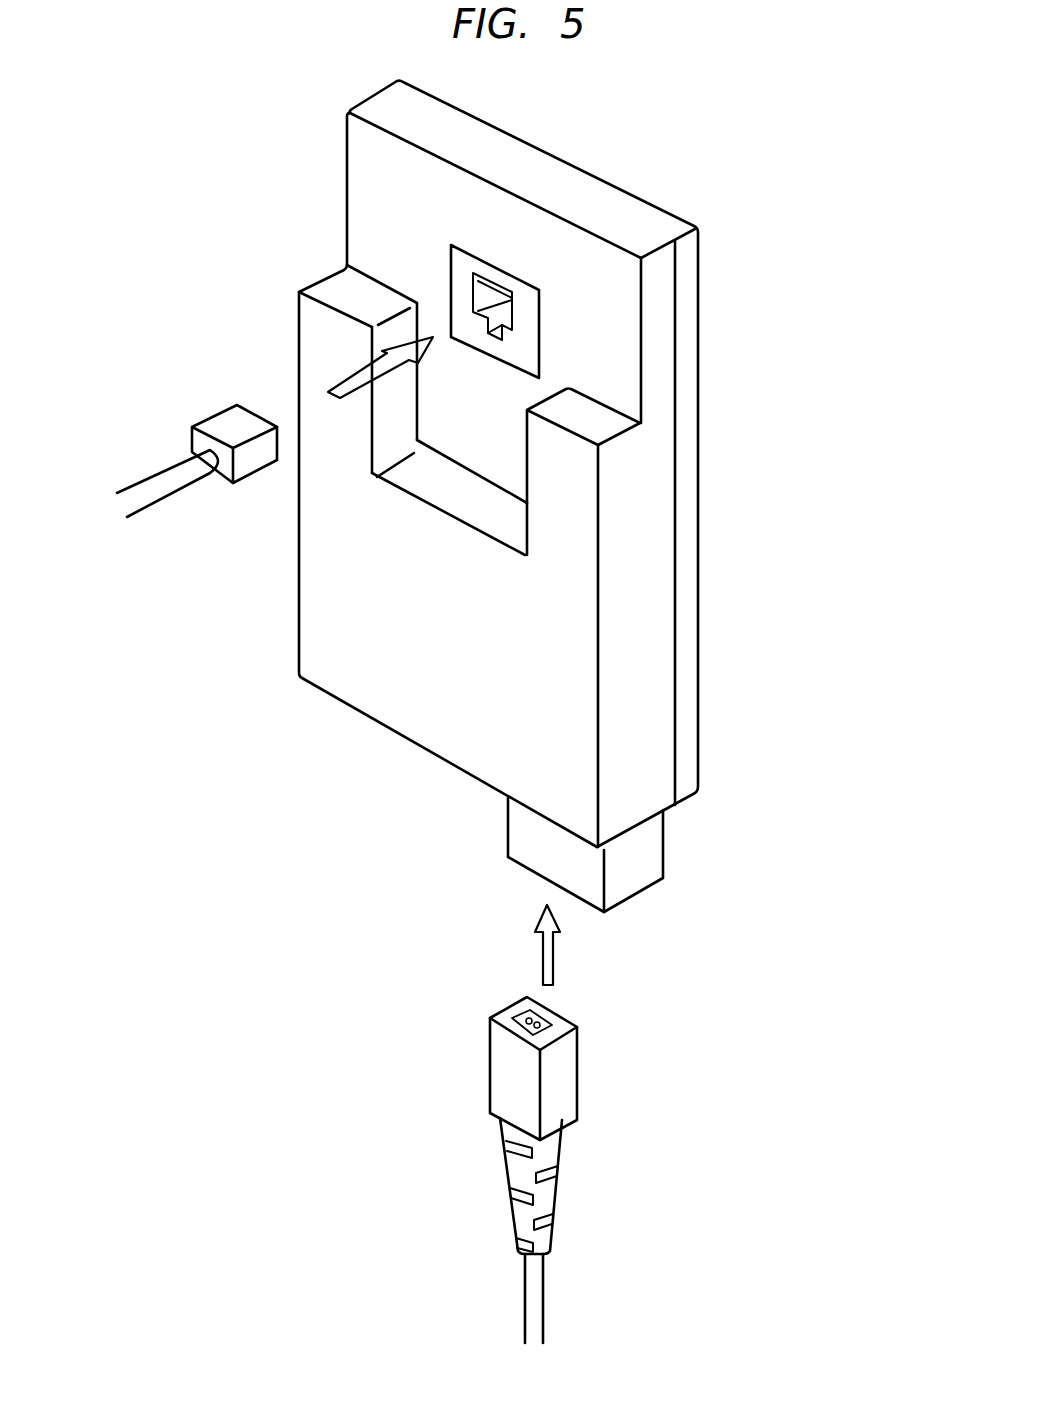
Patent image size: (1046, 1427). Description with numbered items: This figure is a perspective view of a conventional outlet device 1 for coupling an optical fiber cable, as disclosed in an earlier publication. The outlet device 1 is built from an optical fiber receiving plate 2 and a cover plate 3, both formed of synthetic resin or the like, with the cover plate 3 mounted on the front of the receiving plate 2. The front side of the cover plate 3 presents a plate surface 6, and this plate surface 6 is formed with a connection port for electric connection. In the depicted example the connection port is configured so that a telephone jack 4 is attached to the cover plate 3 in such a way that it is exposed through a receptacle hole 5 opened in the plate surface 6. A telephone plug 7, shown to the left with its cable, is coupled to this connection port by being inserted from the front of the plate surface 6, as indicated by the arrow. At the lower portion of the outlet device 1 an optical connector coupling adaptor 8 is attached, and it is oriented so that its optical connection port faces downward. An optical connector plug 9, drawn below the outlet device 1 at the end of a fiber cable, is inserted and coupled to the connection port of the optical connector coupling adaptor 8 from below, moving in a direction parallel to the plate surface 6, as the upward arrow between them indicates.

The outlet device 1 is at (542, 496).
The optical fiber receiving plate 2 is at (685, 542).
The cover plate 3 is at (645, 660).
The telephone jack 4 is at (522, 337).
The receptacle hole 5 is at (527, 283).
The plate surface 6 is at (570, 503).
The telephone plug 7 is at (250, 458).
The optical connector coupling adaptor 8 is at (637, 865).
The optical connector plug 9 is at (558, 1083).